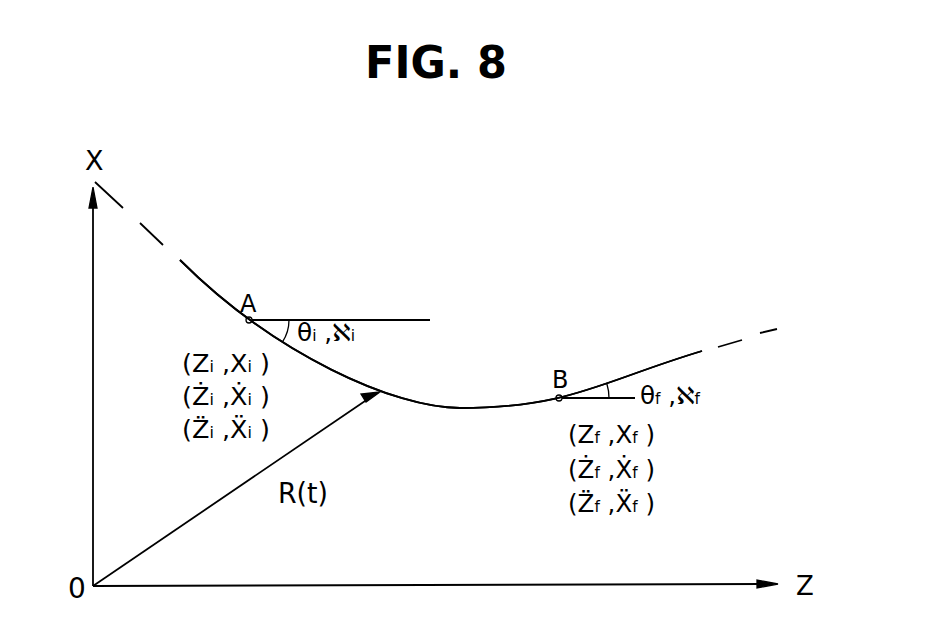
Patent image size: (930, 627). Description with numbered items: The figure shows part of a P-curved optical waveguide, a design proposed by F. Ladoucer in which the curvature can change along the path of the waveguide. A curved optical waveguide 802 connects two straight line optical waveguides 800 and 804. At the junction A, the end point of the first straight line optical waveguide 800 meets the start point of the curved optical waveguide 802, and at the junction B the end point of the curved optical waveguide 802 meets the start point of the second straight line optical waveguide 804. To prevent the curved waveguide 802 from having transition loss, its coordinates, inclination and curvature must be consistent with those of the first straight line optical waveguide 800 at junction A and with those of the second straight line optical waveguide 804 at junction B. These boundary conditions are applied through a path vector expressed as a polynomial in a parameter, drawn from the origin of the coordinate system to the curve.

The first straight line optical waveguide 800 is at (197, 273).
The curved optical waveguide 802 is at (465, 408).
The second straight line optical waveguide 804 is at (633, 375).